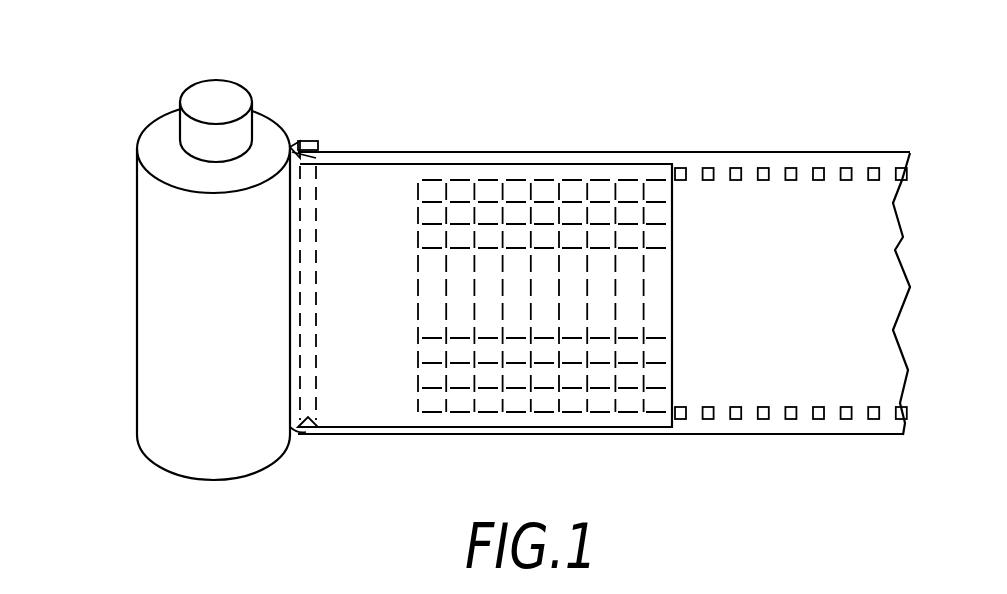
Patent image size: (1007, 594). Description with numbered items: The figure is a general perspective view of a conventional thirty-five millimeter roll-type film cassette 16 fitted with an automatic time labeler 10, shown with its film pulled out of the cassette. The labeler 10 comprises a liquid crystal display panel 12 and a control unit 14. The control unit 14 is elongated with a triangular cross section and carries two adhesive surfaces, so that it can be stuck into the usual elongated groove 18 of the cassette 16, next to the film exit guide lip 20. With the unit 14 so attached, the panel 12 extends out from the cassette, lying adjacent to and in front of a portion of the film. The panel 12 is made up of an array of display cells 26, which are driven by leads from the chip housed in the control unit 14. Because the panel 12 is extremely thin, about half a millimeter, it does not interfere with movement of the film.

The labeler 10 is at (622, 110).
The liquid crystal display panel 12 is at (365, 413).
The control unit 14 is at (300, 143).
The film cassette 16 is at (158, 130).
The groove 18 is at (303, 428).
The film exit guide lip 20 is at (308, 140).
The display cells 26 is at (515, 207).